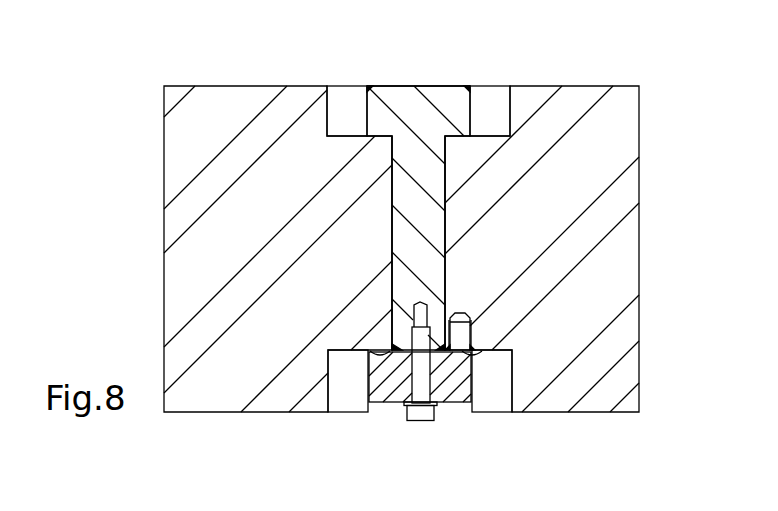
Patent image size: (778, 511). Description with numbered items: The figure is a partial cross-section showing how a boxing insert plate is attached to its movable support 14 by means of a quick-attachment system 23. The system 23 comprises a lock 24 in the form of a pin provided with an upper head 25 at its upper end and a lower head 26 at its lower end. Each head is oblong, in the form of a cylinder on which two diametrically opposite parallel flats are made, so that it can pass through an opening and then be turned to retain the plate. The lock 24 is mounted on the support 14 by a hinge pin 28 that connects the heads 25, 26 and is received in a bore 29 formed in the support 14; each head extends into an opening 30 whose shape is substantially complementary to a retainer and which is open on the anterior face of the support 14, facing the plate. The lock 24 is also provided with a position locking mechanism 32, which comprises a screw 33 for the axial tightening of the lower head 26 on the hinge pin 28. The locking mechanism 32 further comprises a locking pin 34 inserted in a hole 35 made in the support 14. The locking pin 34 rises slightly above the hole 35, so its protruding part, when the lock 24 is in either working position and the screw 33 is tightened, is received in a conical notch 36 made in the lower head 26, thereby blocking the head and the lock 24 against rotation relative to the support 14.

The movable support 14 is at (627, 122).
The quick-attachment system 23 is at (475, 107).
The lock 24 is at (407, 91).
The upper head 25 is at (427, 84).
The lower head 26 is at (453, 398).
The hinge pin 28 is at (393, 224).
The bore 29 is at (445, 178).
The opening 30 is at (327, 108).
The position locking mechanism 32 is at (495, 310).
The screw 33 is at (421, 414).
The locking pin 34 is at (460, 315).
The hole 35 is at (470, 330).
The conical notch 36 is at (460, 355).